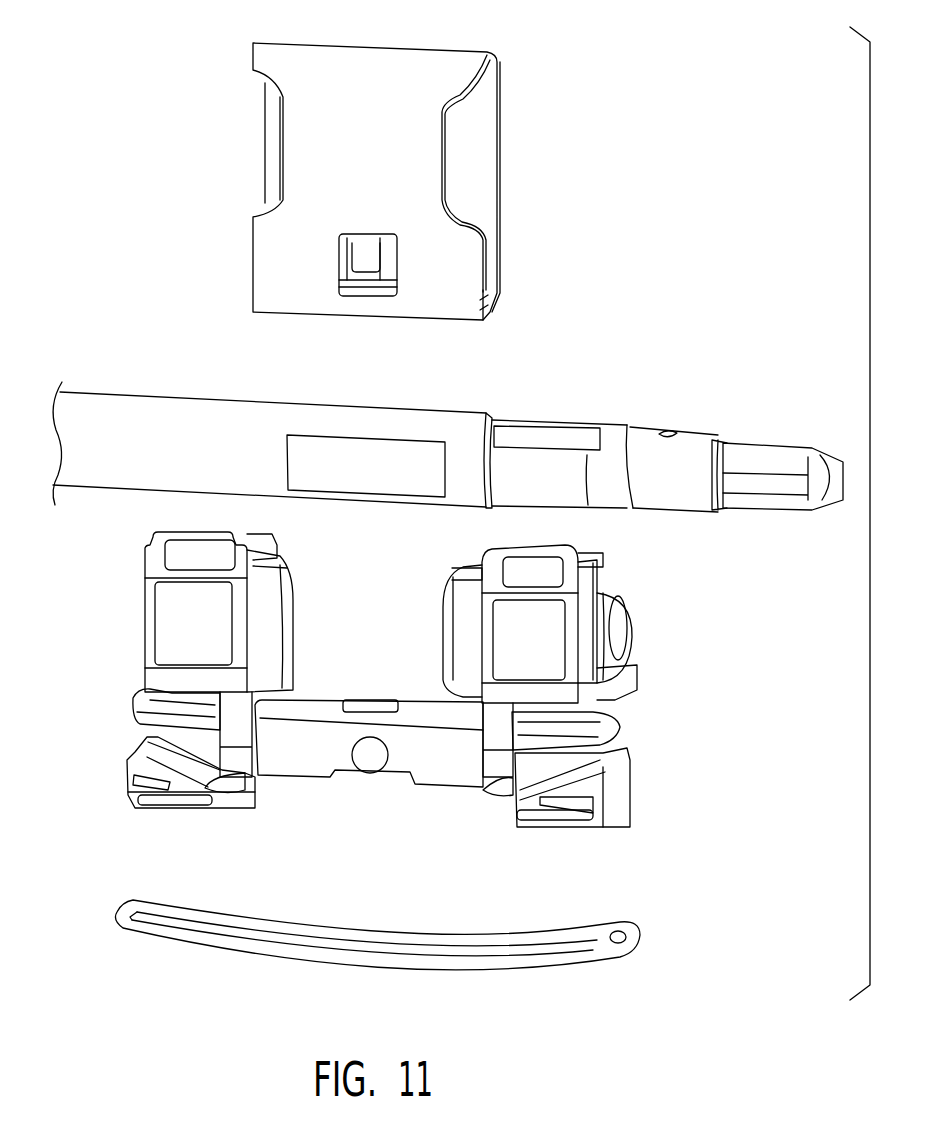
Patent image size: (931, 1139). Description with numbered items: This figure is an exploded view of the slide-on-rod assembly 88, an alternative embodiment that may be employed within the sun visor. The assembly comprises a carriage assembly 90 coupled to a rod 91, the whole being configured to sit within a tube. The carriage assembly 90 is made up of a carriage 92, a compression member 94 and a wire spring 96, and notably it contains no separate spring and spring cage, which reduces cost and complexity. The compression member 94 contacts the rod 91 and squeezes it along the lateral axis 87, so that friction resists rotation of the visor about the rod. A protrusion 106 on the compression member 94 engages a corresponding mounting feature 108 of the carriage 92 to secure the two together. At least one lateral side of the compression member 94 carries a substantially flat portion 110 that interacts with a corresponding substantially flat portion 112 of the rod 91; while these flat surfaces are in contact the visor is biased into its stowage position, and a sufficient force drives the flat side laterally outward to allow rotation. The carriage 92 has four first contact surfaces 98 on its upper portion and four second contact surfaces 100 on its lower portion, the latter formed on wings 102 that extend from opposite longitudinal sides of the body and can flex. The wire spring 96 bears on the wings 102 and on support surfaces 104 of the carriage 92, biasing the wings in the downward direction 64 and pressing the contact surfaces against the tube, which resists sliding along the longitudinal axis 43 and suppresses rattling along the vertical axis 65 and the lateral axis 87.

The compression member 94 is at (380, 43).
The substantially flat portion 110 is at (440, 140).
The protrusion 106 is at (368, 250).
The slide-on-rod assembly 88 is at (140, 315).
The rod 91 is at (196, 392).
The substantially flat portion 112 is at (380, 453).
The carriage 92 is at (372, 693).
The first contact surfaces 98 is at (152, 557).
The support surfaces 104 is at (222, 775).
The second contact surfaces 100 is at (175, 808).
The wings 102 is at (237, 808).
The mounting feature 108 is at (371, 757).
The wire spring 96 is at (575, 955).
The carriage assembly 90 is at (702, 622).
The downward direction 64 is at (691, 797).
The lateral axis 87 is at (644, 84).
The vertical axis 65 is at (658, 62).
The longitudinal axis 43 is at (658, 62).